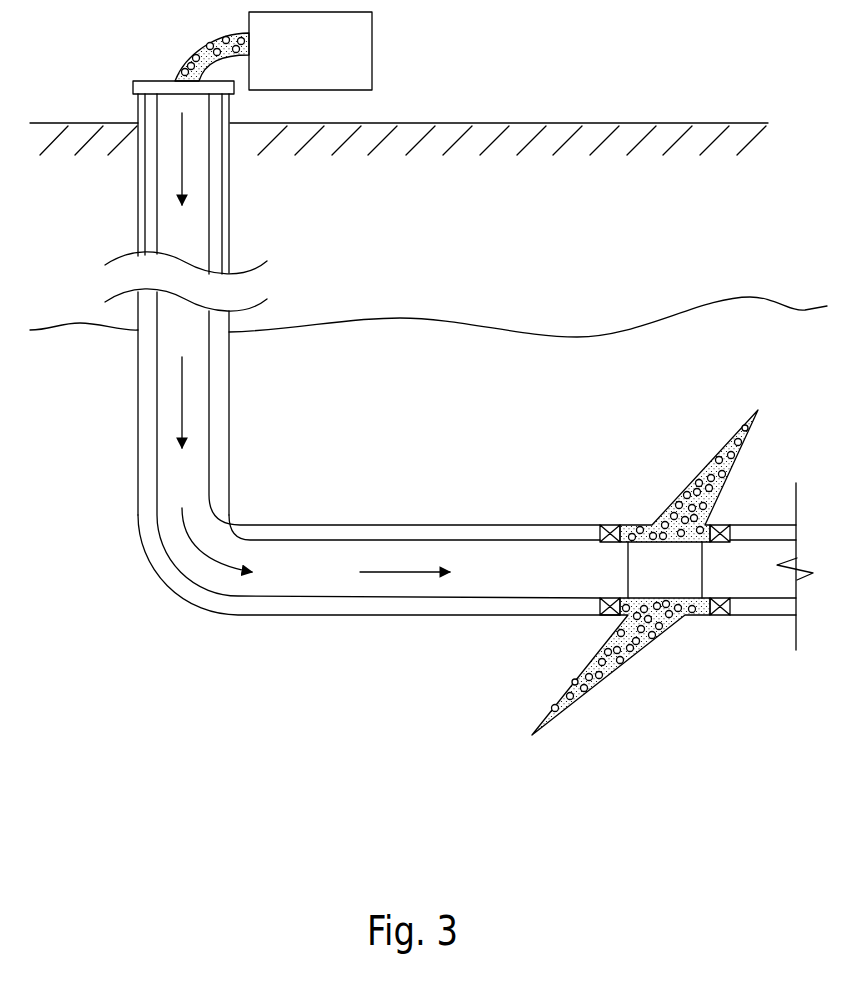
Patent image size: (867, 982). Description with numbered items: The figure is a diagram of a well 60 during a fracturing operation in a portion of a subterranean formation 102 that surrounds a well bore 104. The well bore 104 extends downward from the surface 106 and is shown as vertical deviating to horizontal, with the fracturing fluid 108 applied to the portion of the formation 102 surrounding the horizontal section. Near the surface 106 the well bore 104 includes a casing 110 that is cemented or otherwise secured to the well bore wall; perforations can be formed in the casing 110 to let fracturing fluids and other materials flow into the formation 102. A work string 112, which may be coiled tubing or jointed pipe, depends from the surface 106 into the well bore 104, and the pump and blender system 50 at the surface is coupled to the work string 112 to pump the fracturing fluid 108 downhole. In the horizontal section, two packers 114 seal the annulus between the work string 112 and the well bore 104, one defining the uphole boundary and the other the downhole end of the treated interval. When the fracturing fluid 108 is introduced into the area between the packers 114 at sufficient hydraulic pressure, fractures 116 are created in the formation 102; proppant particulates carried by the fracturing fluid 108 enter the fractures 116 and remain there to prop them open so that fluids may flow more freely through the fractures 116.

The pump and blender system 50 is at (323, 62).
The well 60 is at (155, 602).
The subterranean formation 102 is at (479, 362).
The well bore 104 is at (153, 203).
The surface 106 is at (553, 123).
The fracturing fluid 108 is at (194, 52).
The casing 110 is at (147, 237).
The work string 112 is at (158, 445).
The packers 114 is at (617, 523).
The fractures 116 is at (692, 468).